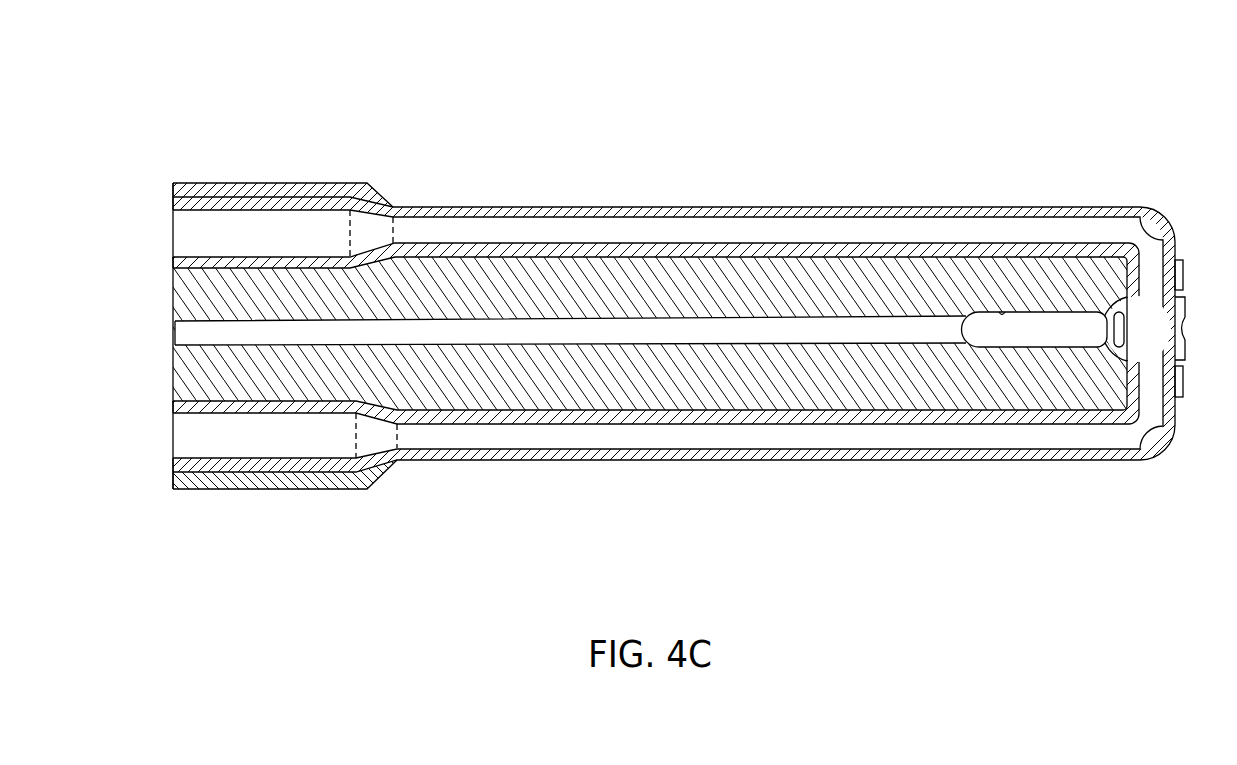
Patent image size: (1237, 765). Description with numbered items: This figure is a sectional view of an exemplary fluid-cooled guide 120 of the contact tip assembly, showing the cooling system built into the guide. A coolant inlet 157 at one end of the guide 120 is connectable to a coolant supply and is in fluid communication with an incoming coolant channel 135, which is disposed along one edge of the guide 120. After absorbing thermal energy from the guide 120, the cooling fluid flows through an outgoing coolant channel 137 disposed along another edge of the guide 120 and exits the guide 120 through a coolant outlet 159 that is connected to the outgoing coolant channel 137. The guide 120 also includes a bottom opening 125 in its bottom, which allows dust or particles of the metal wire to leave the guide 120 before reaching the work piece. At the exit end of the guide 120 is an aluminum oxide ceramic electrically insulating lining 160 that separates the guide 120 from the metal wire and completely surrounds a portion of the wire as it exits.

The guide 120 is at (700, 275).
The bottom opening 125 is at (1022, 312).
The incoming coolant channel 135 is at (427, 437).
The outgoing coolant channel 137 is at (430, 235).
The coolant inlet 157 is at (287, 490).
The coolant outlet 159 is at (257, 182).
The electrically insulating lining 160 is at (1117, 305).